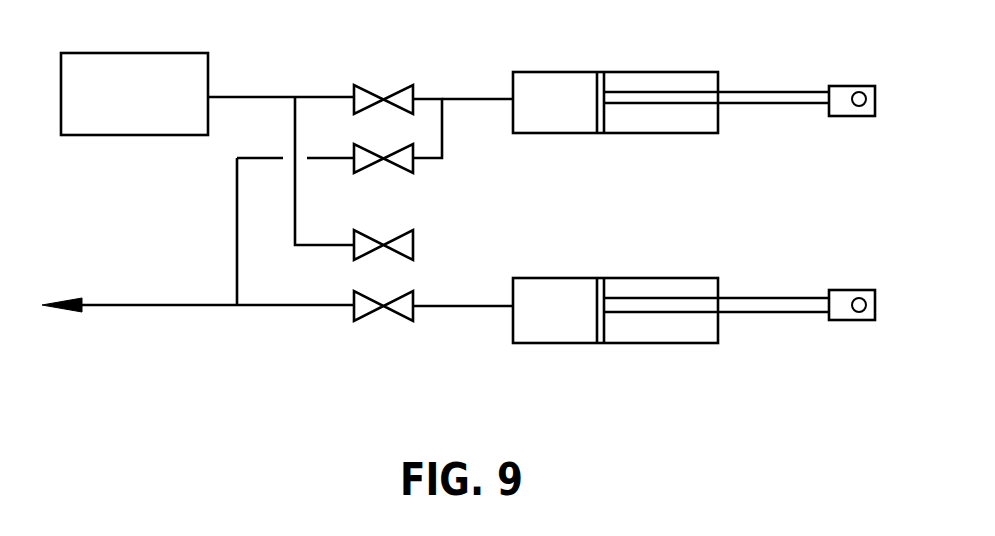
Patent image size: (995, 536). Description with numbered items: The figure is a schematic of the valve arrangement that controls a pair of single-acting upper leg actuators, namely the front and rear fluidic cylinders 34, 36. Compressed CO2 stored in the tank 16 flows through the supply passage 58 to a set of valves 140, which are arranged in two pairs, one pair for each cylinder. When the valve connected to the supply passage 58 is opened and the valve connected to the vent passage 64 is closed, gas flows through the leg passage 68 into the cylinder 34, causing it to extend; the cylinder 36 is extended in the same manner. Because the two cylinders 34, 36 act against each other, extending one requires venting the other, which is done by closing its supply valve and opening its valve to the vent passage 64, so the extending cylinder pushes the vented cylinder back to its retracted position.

The tank 16 is at (148, 53).
The supply passage 58 is at (256, 97).
The valves 140 is at (416, 153).
The leg passage 68 is at (471, 102).
The front fluidic cylinder 34 is at (645, 72).
The rear fluidic cylinder 36 is at (645, 278).
The vent passage 64 is at (138, 305).